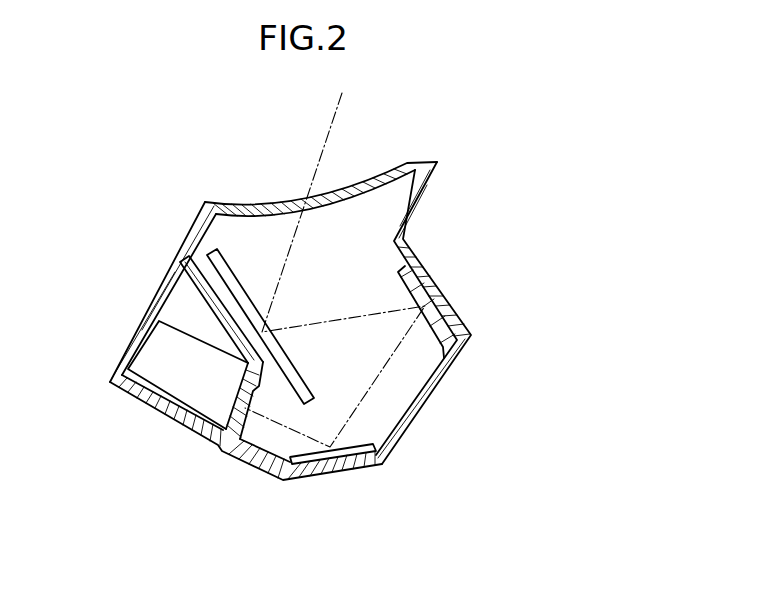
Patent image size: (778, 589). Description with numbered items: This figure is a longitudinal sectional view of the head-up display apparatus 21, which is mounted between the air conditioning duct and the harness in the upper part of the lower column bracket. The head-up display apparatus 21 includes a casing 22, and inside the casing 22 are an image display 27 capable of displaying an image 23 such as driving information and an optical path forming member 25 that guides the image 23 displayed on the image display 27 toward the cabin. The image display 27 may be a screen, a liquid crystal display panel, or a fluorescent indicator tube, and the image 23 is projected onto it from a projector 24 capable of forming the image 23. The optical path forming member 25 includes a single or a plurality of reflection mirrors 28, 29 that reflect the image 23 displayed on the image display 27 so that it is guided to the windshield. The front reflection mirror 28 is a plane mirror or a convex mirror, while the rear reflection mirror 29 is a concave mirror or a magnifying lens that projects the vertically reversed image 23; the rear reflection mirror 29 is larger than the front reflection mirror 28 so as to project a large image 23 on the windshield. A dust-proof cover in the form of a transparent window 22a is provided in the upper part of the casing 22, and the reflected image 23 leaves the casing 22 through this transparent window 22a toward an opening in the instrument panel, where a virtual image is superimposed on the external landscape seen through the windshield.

The head-up display apparatus 21 is at (484, 165).
The casing 22 is at (412, 247).
The transparent window 22a is at (372, 176).
The image 23 is at (320, 138).
The projector 24 is at (184, 390).
The optical path forming member 25 is at (402, 394).
The image display 27 is at (333, 452).
The front reflection mirror 28 is at (450, 304).
The rear reflection mirror 29 is at (288, 390).